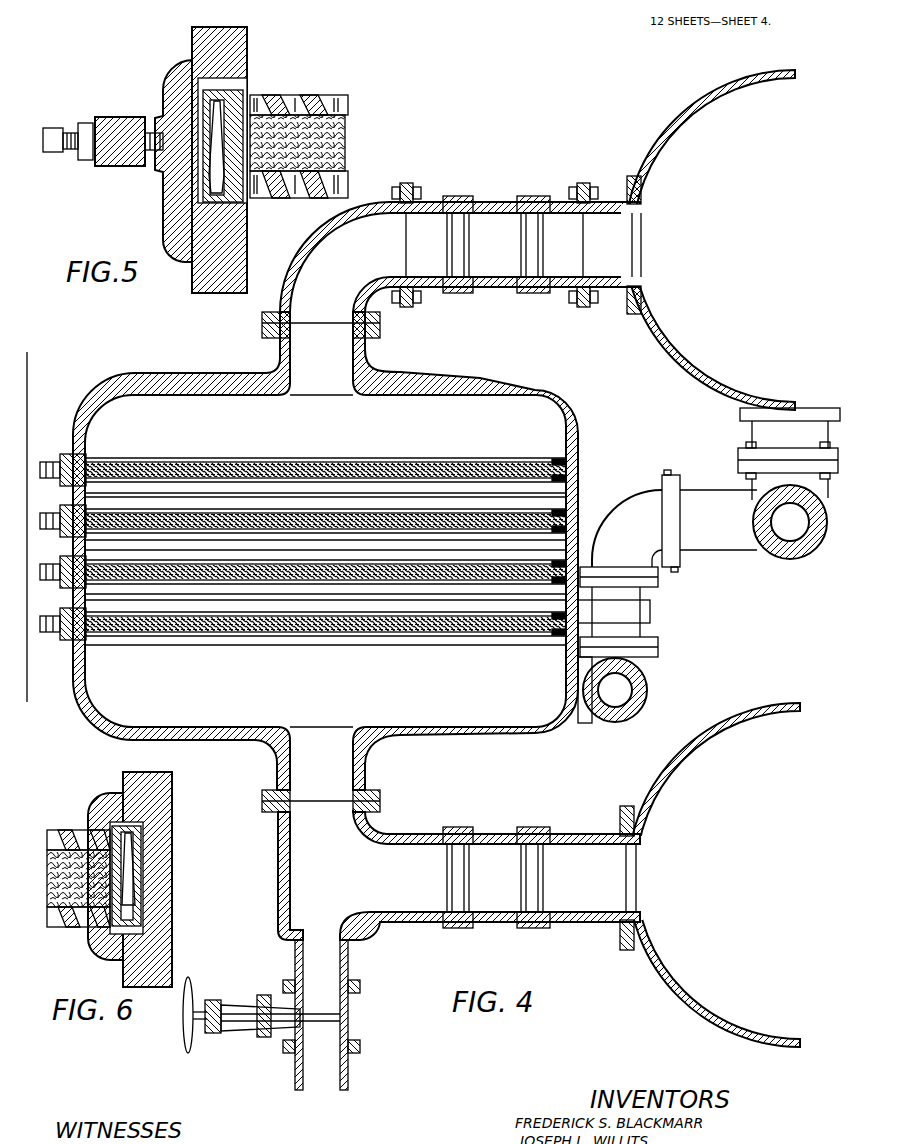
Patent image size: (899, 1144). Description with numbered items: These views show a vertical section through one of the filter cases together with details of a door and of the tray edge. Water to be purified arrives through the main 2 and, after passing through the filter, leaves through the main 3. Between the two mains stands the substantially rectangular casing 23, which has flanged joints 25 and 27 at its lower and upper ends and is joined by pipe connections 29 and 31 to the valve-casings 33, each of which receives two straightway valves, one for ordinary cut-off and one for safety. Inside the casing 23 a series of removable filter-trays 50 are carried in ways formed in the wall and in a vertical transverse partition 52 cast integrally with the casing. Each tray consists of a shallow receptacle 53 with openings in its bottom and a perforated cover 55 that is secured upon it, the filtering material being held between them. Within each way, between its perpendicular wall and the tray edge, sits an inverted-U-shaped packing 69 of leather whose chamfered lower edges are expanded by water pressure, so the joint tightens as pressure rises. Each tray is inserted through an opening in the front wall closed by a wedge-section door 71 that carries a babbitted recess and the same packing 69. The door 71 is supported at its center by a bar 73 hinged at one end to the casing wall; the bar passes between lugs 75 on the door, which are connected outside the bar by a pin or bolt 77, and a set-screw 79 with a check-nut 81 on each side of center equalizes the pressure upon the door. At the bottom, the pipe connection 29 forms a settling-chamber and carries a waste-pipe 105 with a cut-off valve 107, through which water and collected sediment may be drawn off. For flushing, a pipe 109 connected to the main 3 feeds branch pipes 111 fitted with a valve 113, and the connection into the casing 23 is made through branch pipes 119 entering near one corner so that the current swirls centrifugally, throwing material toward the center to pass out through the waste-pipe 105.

In FIG. 4, the pipe, main, or conductor 2 is at (652, 780).
In FIG. 4, the pipe, main, or conductor 3 is at (663, 350).
In FIG. 4, the casing 23 is at (143, 378).
In FIG. 5, the casing 23 is at (232, 56).
In FIG. 6, the casing 23 is at (160, 951).
In FIG. 4, the flanged joint 25 is at (272, 768).
In FIG. 4, the flanged joint 27 is at (278, 346).
In FIG. 4, the pipe connection 29 is at (366, 936).
In FIG. 4, the pipe connection 31 is at (302, 252).
In FIG. 4, the valve-casing 33 is at (497, 288).
In FIG. 4, the filter-tray 50 is at (470, 483).
In FIG. 5, the filter-tray 50 is at (292, 198).
In FIG. 6, the filter-tray 50 is at (75, 830).
In FIG. 4, the vertical transverse partition 52 is at (355, 500).
In FIG. 4, the receptacle 53 is at (288, 618).
In FIG. 5, the receptacle 53 is at (332, 174).
In FIG. 6, the receptacle 53 is at (60, 927).
In FIG. 4, the cover 55 is at (188, 612).
In FIG. 5, the cover 55 is at (306, 98).
In FIG. 6, the cover 55 is at (49, 832).
In FIG. 4, the inverted-U-shaped packing 69 is at (82, 563).
In FIG. 5, the inverted-U-shaped packing 69 is at (212, 118).
In FIG. 6, the inverted-U-shaped packing 69 is at (142, 883).
In FIG. 4, the door 71 is at (62, 458).
In FIG. 5, the door 71 is at (166, 209).
In FIG. 4, the bar 73 is at (58, 480).
In FIG. 5, the bar 73 is at (105, 168).
In FIG. 4, the lugs 75 is at (36, 455).
In FIG. 4, the pin or bolt 77 is at (80, 458).
In FIG. 5, the set-screw 79 is at (52, 130).
In FIG. 5, the check-nut 81 is at (86, 122).
In FIG. 4, the waste-pipe 105 is at (348, 1034).
In FIG. 4, the cut-off valve 107 is at (330, 1092).
In FIG. 4, the pipe 109 is at (785, 562).
In FIG. 4, the branch pipe 111 is at (668, 528).
In FIG. 4, the valve 113 is at (642, 611).
In FIG. 4, the branch pipe 119 is at (650, 694).